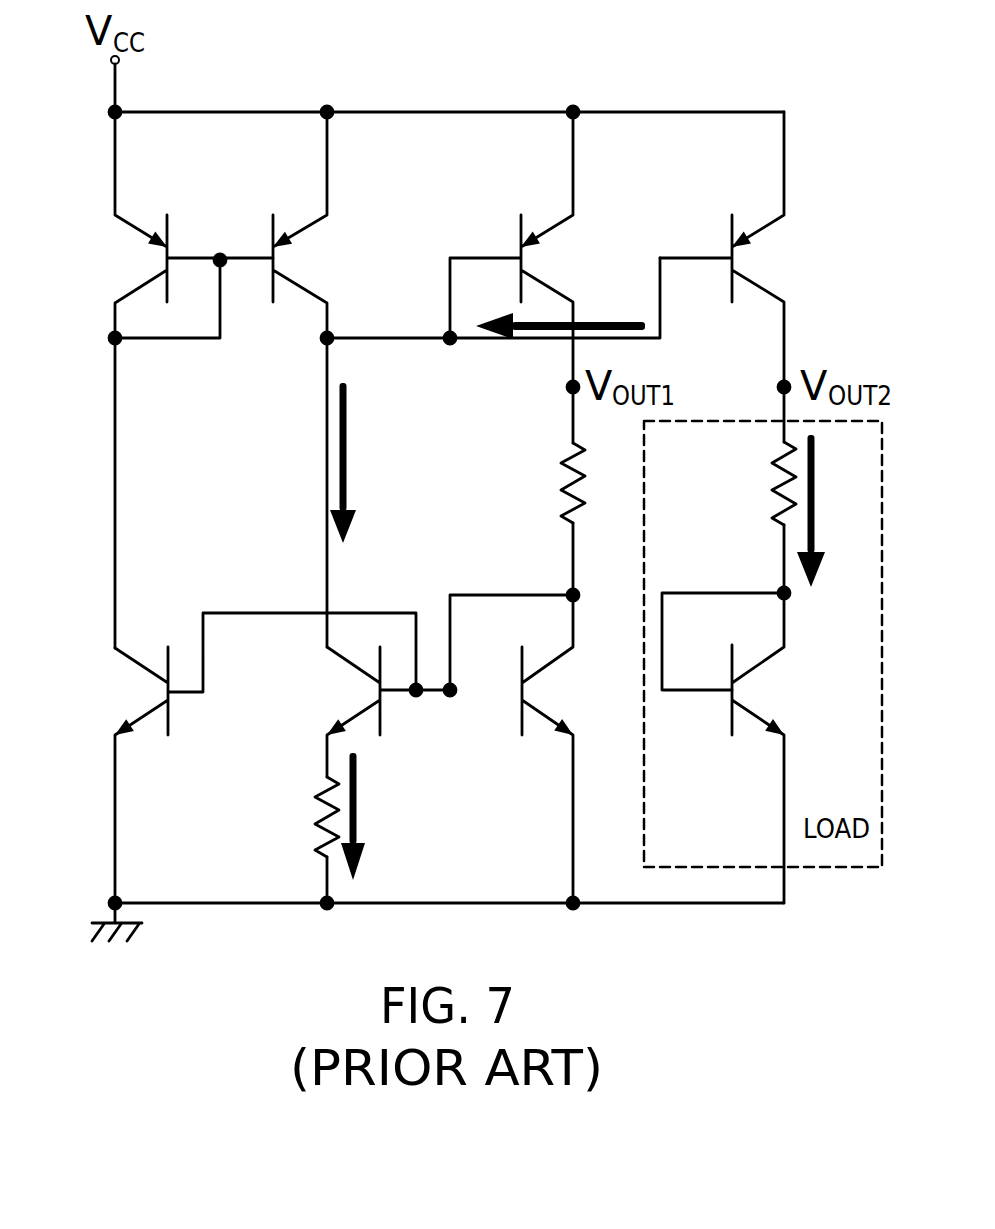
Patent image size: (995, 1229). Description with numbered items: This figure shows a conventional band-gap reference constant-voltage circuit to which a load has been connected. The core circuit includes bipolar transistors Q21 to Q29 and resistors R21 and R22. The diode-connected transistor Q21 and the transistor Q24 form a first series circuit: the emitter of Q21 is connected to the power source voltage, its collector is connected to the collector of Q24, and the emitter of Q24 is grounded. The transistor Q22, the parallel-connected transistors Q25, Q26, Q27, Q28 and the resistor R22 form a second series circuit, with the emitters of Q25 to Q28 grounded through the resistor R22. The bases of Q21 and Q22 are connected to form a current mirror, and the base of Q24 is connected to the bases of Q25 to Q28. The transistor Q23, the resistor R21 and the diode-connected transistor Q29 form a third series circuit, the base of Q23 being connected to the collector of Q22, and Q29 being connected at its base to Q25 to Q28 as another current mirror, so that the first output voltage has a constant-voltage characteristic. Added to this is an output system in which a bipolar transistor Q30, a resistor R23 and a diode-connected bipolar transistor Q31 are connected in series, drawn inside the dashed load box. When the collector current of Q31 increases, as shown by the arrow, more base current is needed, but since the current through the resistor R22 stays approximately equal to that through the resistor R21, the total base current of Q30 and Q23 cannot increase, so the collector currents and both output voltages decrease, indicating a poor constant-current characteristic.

The transistor Q21 is at (154, 225).
The transistor Q22 is at (335, 225).
The transistor Q23 is at (546, 277).
The transistor Q24 is at (219, 758).
The transistor Q25 is at (354, 707).
The transistor Q26 is at (354, 725).
The transistor Q27 is at (354, 725).
The transistor Q28 is at (354, 725).
The transistor Q29 is at (576, 749).
The bipolar transistor Q30 is at (757, 277).
The diode-connected bipolar transistor Q31 is at (788, 748).
The resistor R21 is at (540, 519).
The resistor R22 is at (372, 840).
The resistor R23 is at (746, 517).